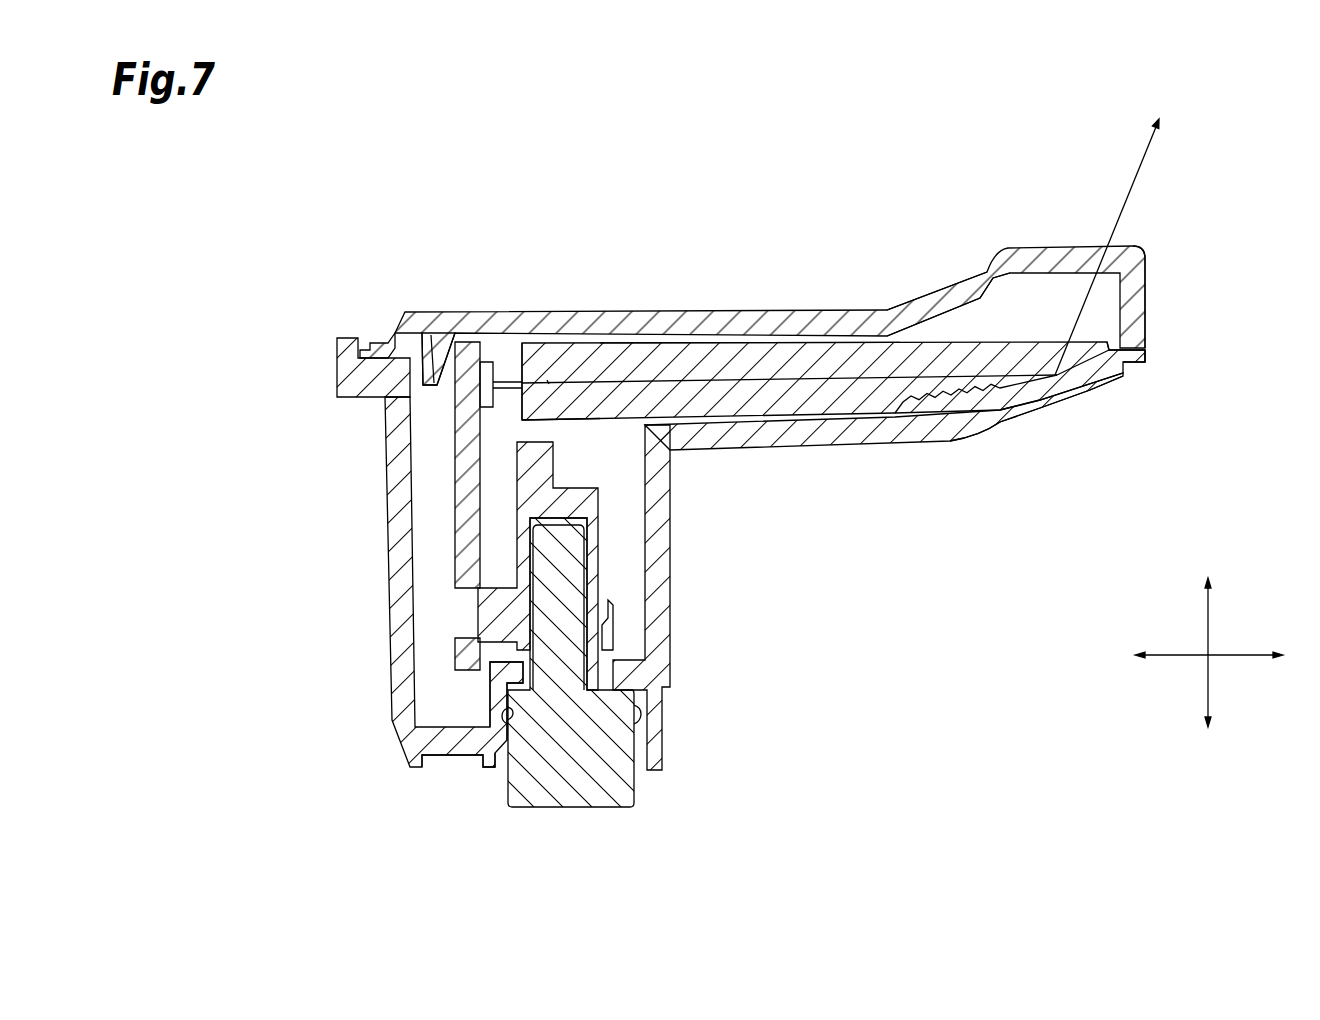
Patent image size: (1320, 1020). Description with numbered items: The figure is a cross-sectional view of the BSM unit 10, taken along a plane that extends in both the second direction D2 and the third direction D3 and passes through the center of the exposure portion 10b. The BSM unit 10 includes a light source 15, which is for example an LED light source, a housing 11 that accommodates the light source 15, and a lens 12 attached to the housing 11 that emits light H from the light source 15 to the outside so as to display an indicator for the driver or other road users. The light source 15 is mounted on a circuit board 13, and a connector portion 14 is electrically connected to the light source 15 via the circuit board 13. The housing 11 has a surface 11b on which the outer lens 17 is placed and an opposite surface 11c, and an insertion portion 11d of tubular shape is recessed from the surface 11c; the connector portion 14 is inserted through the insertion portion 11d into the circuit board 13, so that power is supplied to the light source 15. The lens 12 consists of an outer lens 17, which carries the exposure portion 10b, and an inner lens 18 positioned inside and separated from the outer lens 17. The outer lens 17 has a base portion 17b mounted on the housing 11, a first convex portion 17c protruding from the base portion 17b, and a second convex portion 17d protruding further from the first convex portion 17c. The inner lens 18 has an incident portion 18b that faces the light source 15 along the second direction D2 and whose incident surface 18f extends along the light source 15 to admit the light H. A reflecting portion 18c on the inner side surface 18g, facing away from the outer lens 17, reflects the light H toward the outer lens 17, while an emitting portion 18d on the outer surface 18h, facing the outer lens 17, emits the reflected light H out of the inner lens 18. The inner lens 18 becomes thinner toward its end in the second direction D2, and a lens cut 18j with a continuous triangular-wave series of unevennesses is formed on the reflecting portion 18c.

The BSM unit 10 is at (1140, 428).
The exposure portion 10b is at (1148, 235).
The housing 11 is at (672, 517).
The surface 11b is at (378, 348).
The surface 11c is at (470, 758).
The insertion portion 11d is at (544, 690).
The lens 12 is at (975, 176).
The circuit board 13 is at (460, 487).
The connector portion 14 is at (592, 563).
The light source 15 is at (512, 356).
The outer lens 17 is at (955, 287).
The base portion 17b is at (378, 345).
The first convex portion 17c is at (450, 333).
The second convex portion 17d is at (985, 290).
The inner lens 18 is at (858, 340).
The incident portion 18b is at (519, 355).
The reflecting portion 18c is at (1150, 356).
The emitting portion 18d is at (1122, 344).
The incident surface 18f is at (520, 405).
The inner side surface 18g is at (870, 420).
The outer surface 18h is at (736, 341).
The lens cut 18j is at (982, 432).
The light H is at (548, 382).
The second direction D2 is at (1178, 657).
The third direction D3 is at (1210, 617).